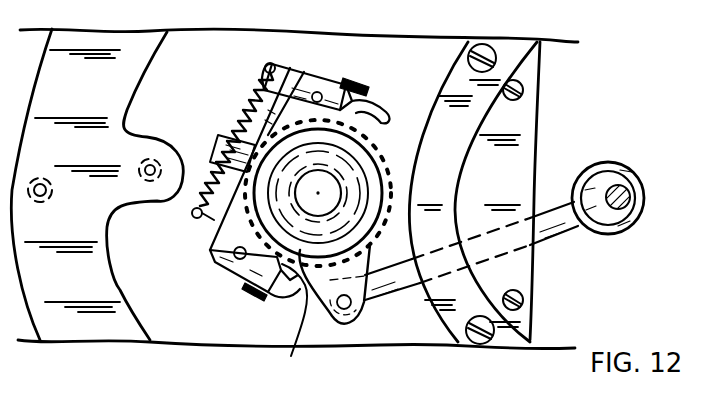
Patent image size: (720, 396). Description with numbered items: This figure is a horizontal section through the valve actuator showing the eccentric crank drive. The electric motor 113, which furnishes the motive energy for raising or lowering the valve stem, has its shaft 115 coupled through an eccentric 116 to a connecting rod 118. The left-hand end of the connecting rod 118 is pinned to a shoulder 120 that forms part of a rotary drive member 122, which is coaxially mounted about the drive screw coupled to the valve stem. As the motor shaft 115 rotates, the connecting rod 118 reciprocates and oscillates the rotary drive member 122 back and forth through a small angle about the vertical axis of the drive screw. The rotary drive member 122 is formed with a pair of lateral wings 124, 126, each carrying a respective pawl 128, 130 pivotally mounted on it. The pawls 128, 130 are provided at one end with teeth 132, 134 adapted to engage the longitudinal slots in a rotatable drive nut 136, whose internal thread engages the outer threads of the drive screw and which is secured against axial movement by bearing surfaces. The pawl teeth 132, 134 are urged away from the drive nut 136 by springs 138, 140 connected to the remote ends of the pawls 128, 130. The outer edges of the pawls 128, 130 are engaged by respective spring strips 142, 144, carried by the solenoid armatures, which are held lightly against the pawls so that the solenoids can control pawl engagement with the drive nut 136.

The electric motor 113 is at (667, 92).
The shaft of motor 115 is at (630, 190).
The eccentric 116 is at (602, 185).
The connecting rod 118 is at (560, 236).
The shoulder 120 is at (337, 322).
The rotary drive member 122 is at (383, 256).
The lateral wing 124 is at (215, 260).
The lateral wing 126 is at (296, 86).
The pawl 128 is at (291, 295).
The pawl 130 is at (338, 82).
The tooth 132 is at (291, 356).
The tooth 134 is at (398, 122).
The rotatable drive nut 136 is at (385, 151).
The spring 138 is at (190, 202).
The spring 140 is at (238, 128).
The spring strip 142 is at (255, 292).
The spring strip 144 is at (362, 88).